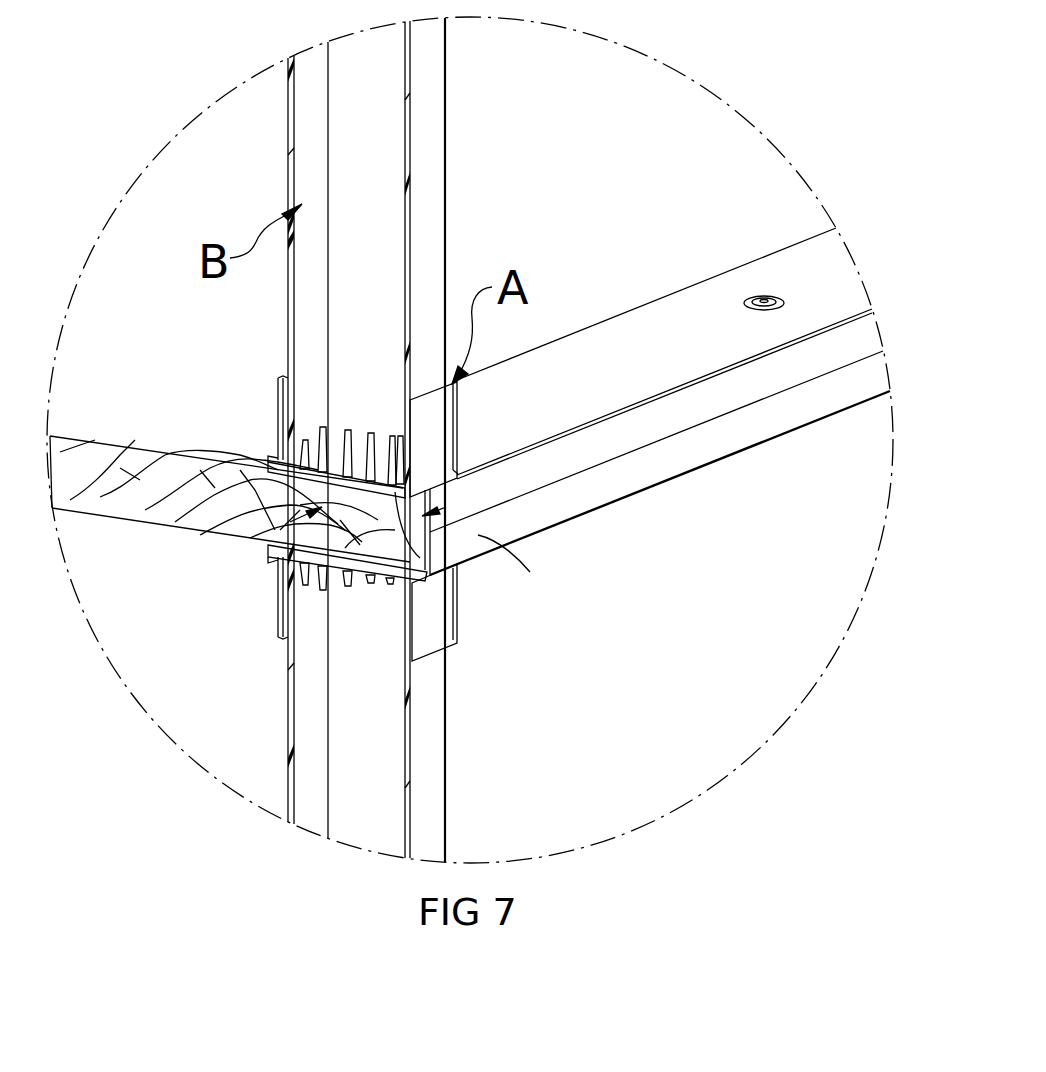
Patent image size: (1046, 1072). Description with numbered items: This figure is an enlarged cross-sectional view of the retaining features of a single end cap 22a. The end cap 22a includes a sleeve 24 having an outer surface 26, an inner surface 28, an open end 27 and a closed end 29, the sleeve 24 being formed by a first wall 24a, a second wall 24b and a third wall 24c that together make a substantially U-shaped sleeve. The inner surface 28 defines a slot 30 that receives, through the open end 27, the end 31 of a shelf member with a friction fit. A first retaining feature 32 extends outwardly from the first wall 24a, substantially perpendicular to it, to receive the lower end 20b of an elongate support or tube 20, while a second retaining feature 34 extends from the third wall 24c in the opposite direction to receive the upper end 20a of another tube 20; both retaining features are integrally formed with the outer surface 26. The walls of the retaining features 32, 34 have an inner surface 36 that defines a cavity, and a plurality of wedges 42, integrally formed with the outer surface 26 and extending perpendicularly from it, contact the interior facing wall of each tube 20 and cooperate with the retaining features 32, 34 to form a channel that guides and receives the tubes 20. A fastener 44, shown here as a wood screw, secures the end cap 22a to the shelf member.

The elongate support 20 is at (372, 274).
The upper end 20a is at (450, 628).
The lower end 20b is at (280, 412).
The single end cap 22a is at (680, 326).
The sleeve 24 is at (669, 391).
The first wall 24a is at (796, 250).
The second wall 24b is at (736, 442).
The third wall 24c is at (545, 540).
The outer surface 26 is at (778, 334).
The open end 27 is at (276, 460).
The inner surface 28 is at (456, 578).
The closed end 29 is at (476, 536).
The slot 30 is at (440, 505).
The end 31 is at (272, 542).
The first retaining feature 32 is at (448, 424).
The second retaining feature 34 is at (446, 592).
The inner surface 36 is at (392, 432).
The wedge 42 is at (372, 430).
The fastener 44 is at (756, 296).